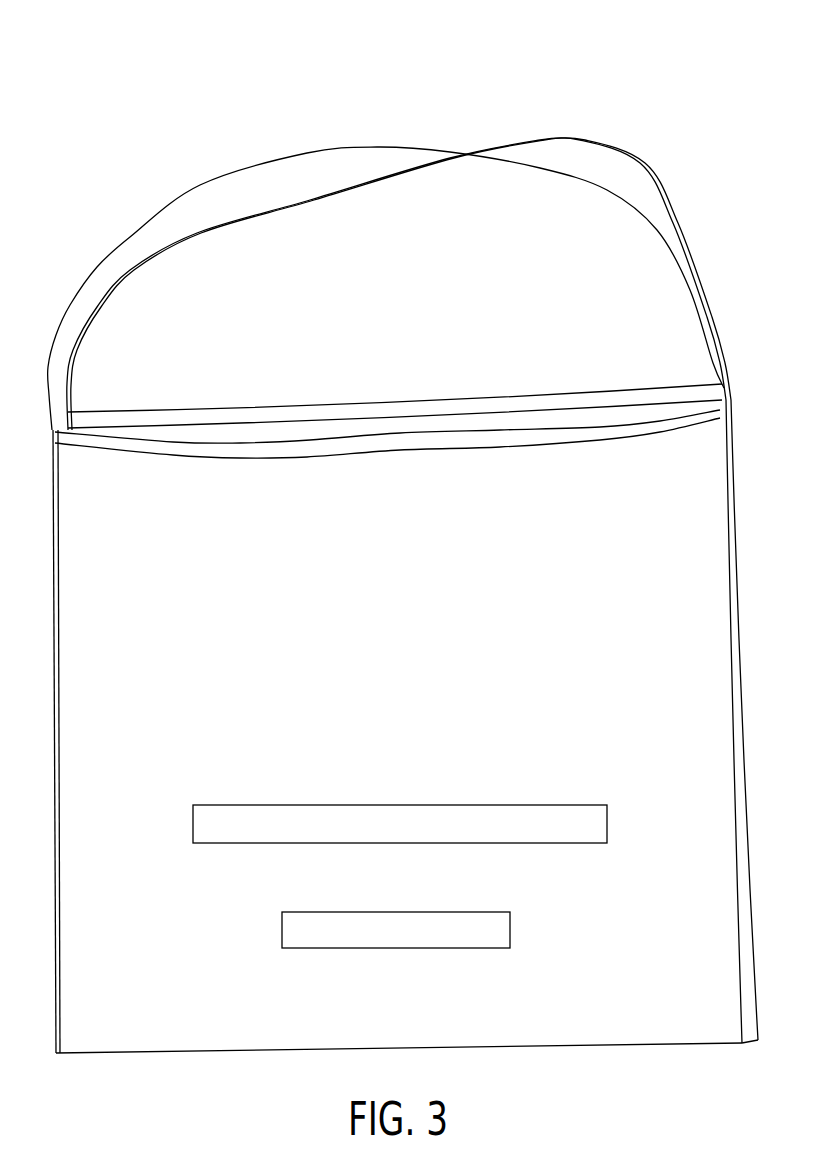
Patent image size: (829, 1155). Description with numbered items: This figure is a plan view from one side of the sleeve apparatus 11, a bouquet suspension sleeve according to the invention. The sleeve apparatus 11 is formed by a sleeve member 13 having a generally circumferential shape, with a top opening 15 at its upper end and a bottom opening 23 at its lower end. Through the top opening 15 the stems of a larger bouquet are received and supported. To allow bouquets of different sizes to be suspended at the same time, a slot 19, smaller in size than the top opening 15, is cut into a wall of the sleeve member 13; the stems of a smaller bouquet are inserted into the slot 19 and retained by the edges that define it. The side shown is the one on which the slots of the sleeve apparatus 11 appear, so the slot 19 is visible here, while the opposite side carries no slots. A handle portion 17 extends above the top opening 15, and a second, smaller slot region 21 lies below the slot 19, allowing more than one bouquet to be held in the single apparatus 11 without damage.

The sleeve apparatus 11 is at (722, 75).
The sleeve member 13 is at (388, 608).
The top opening 15 is at (428, 423).
The handle 17 is at (568, 162).
The slot 19 is at (500, 812).
The lower pocket strip 21 is at (442, 937).
The bottom opening 23 is at (573, 1048).